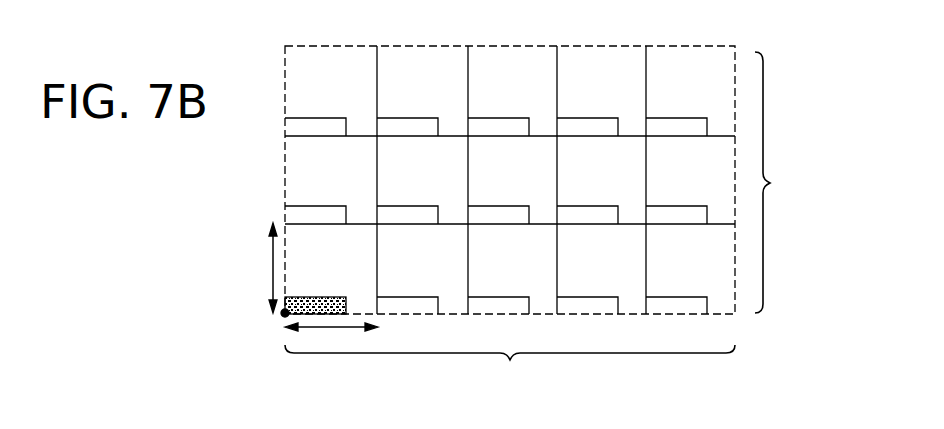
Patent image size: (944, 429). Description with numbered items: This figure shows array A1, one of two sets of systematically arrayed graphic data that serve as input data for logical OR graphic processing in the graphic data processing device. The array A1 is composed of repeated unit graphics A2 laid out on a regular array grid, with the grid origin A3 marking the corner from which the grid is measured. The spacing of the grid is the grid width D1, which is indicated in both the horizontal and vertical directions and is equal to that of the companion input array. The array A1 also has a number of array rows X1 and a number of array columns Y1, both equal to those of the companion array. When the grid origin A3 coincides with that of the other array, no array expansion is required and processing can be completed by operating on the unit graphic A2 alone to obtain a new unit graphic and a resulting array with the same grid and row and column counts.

The array A1 is at (735, 90).
The unit graphic A2 is at (315, 297).
The grid origin A3 is at (283, 315).
The grid width D1 is at (272, 268).
The number of array rows X1 is at (510, 368).
The number of array columns Y1 is at (781, 182).